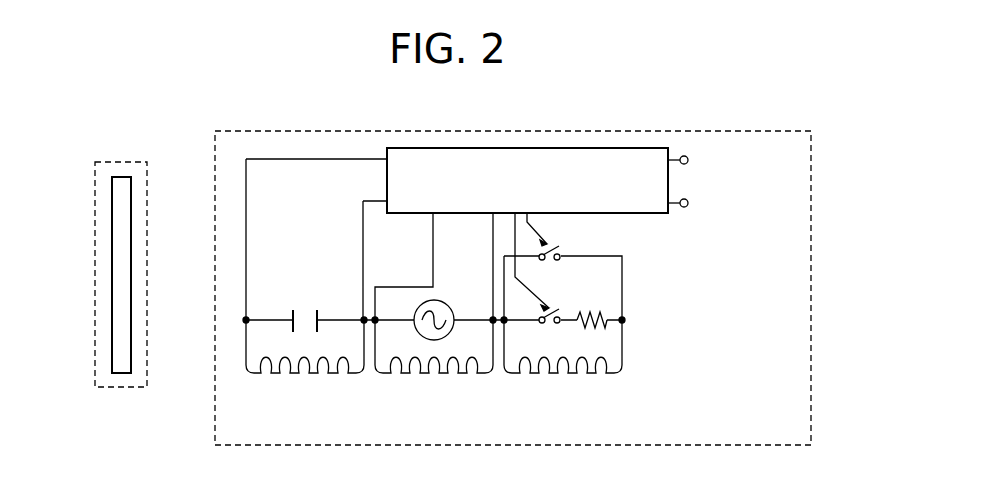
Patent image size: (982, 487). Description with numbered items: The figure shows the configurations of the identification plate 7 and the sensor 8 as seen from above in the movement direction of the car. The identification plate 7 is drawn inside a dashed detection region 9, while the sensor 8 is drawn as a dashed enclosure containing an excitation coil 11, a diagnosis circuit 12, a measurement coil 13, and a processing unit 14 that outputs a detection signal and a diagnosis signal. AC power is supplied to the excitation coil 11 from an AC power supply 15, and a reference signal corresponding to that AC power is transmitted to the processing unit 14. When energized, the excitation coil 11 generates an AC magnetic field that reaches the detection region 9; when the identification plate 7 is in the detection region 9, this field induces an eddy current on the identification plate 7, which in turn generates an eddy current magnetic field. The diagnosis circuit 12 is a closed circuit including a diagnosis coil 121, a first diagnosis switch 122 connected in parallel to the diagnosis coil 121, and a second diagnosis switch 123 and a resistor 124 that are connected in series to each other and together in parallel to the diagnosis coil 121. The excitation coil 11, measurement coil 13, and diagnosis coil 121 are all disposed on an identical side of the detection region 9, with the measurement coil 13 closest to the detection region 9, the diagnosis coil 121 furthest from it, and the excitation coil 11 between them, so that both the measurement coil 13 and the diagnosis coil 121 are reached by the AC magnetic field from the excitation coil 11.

The identification plate 7 is at (123, 177).
The sensor 8 is at (673, 131).
The detection region 9 is at (168, 390).
The excitation coil 11 is at (420, 375).
The diagnosis circuit 12 is at (600, 321).
The measurement coil 13 is at (292, 375).
The processing unit 14 is at (652, 213).
The AC power supply 15 is at (447, 303).
The diagnosis coil 121 is at (548, 375).
The first diagnosis switch 122 is at (560, 247).
The second diagnosis switch 123 is at (550, 309).
The resistor 124 is at (592, 309).